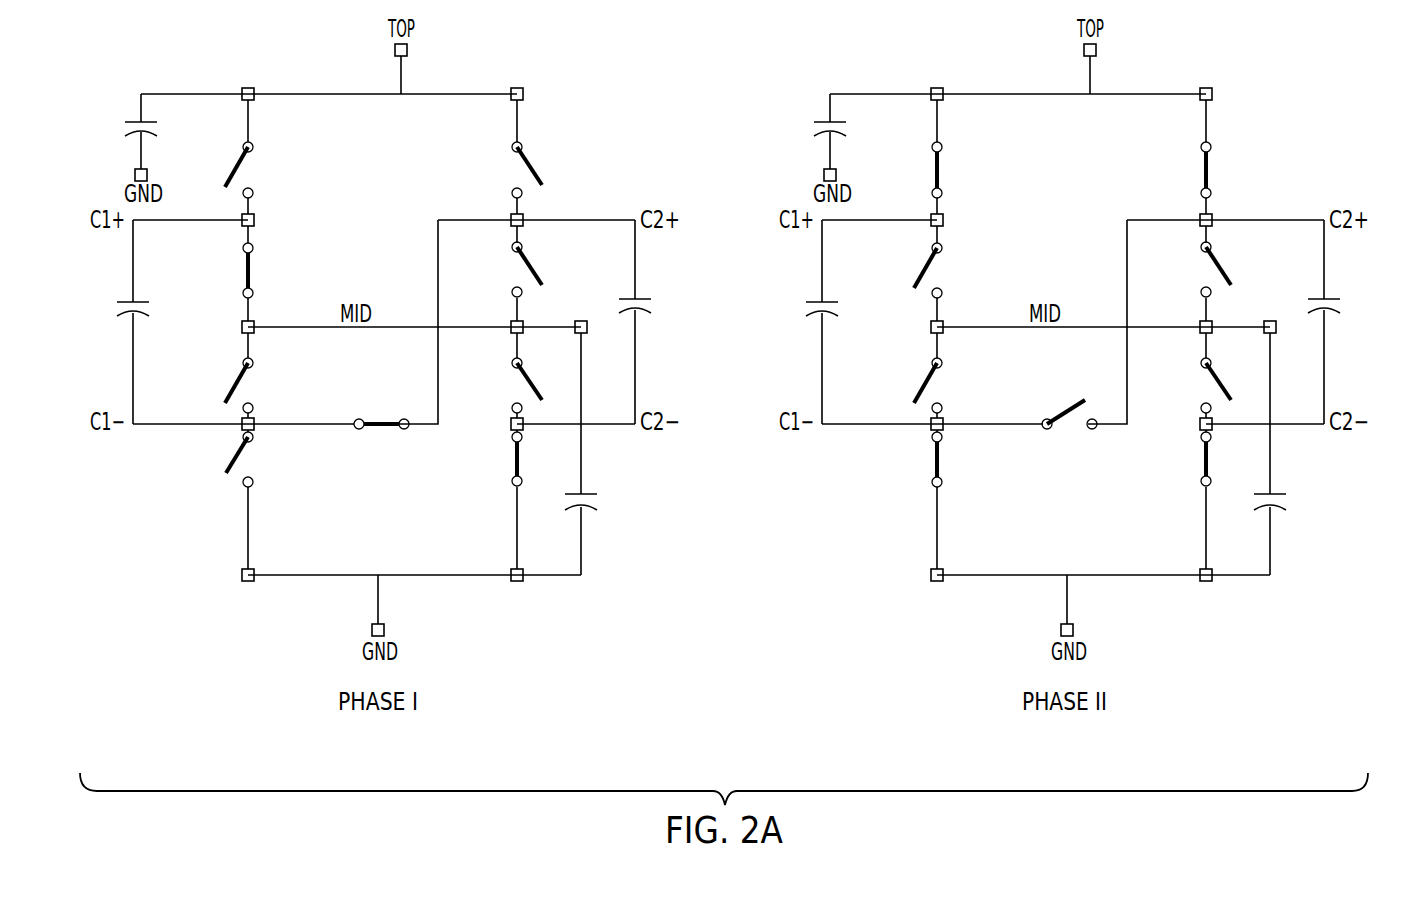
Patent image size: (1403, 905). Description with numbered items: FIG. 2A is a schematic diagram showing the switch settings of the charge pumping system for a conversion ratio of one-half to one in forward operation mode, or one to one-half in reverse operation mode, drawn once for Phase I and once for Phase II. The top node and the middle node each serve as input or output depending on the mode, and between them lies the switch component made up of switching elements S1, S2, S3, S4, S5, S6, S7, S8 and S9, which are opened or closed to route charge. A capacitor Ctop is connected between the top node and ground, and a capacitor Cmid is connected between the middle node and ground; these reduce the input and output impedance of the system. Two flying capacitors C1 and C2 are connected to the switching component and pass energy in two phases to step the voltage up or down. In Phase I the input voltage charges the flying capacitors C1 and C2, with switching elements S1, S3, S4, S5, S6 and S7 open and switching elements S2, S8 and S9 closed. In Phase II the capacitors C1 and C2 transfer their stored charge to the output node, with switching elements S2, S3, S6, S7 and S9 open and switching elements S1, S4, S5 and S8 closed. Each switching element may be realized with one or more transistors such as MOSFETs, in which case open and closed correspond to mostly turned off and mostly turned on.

The switching element S1 is at (601, 170).
The switching element S2 is at (611, 270).
The switching element S3 is at (602, 385).
The switching element S4 is at (602, 459).
The switching element S5 is at (845, 170).
The switching element S6 is at (856, 269).
The switching element S7 is at (856, 385).
The switching element S8 is at (846, 459).
The switching element S9 is at (725, 431).
The flying capacitor C1 is at (464, 322).
The flying capacitor C2 is at (995, 322).
The capacitor Ctop is at (511, 131).
The capacitor Cmid is at (908, 454).